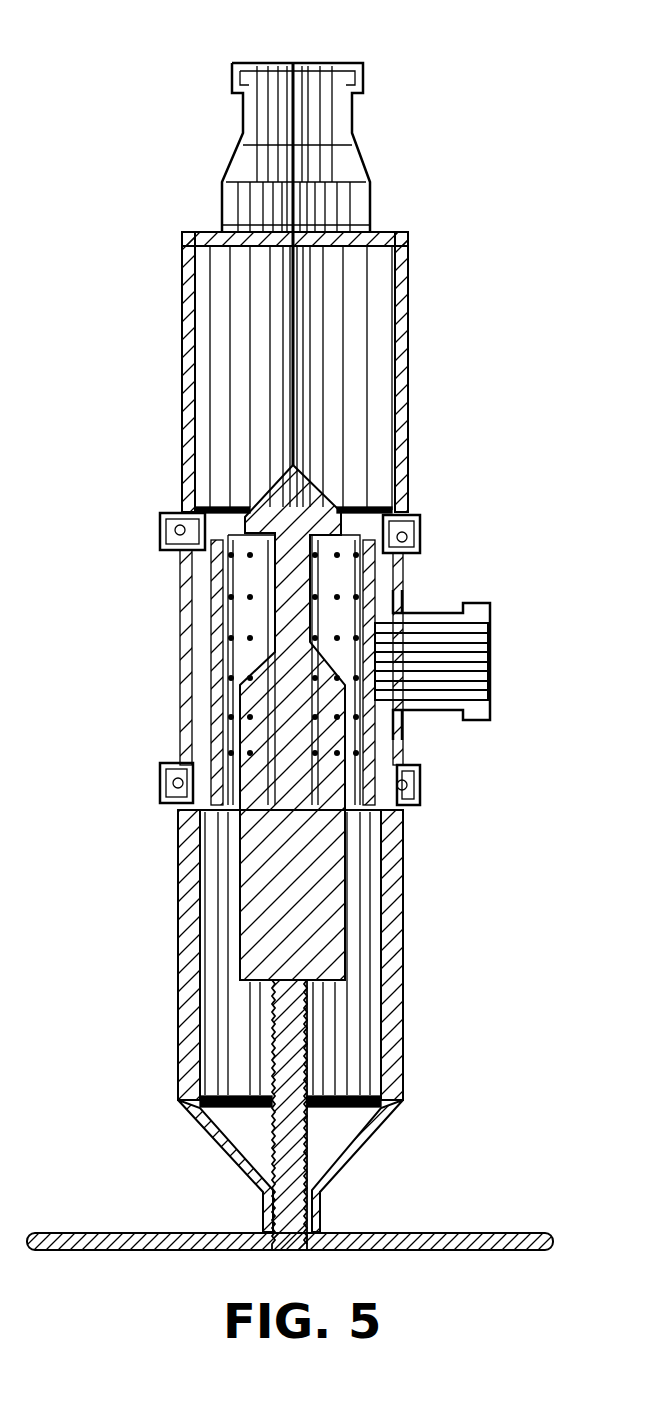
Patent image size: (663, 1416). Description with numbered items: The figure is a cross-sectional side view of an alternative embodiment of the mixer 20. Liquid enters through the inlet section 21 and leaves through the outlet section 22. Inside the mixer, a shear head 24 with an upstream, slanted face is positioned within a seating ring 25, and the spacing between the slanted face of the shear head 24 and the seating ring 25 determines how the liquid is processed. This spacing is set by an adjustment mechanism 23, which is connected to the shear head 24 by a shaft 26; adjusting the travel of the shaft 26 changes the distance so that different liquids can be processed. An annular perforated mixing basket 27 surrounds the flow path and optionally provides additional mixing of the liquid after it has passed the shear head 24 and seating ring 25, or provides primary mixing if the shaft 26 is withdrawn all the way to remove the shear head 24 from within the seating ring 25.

The mixer 20 is at (398, 458).
The inlet section 21 is at (293, 63).
The outlet section 22 is at (490, 659).
The adjustment mechanism 23 is at (510, 1233).
The shear head 24 is at (265, 495).
The seating ring 25 is at (178, 574).
The shaft 26 is at (307, 1003).
The annular perforated mixing basket 27 is at (343, 588).